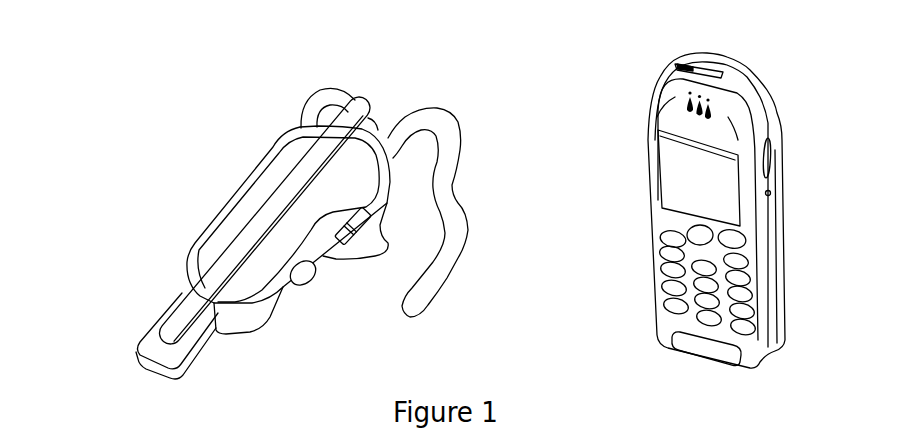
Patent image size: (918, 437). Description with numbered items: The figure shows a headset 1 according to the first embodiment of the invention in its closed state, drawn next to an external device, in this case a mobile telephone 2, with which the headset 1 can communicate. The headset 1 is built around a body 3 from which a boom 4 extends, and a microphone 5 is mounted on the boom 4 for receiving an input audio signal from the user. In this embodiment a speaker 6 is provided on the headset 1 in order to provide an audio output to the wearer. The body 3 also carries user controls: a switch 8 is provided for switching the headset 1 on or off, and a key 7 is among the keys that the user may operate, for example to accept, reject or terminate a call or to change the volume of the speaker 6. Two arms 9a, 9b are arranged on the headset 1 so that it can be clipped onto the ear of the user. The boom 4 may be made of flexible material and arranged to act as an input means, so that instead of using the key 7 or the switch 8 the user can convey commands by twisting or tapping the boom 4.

The headset 1 is at (497, 81).
The mobile telephone 2 is at (764, 45).
The body 3 is at (243, 180).
The boom 4 is at (359, 98).
The microphone 5 is at (130, 350).
The speaker 6 is at (367, 265).
The key 7 is at (303, 287).
The switch 8 is at (320, 258).
The arm 9a is at (292, 103).
The arm 9b is at (471, 197).